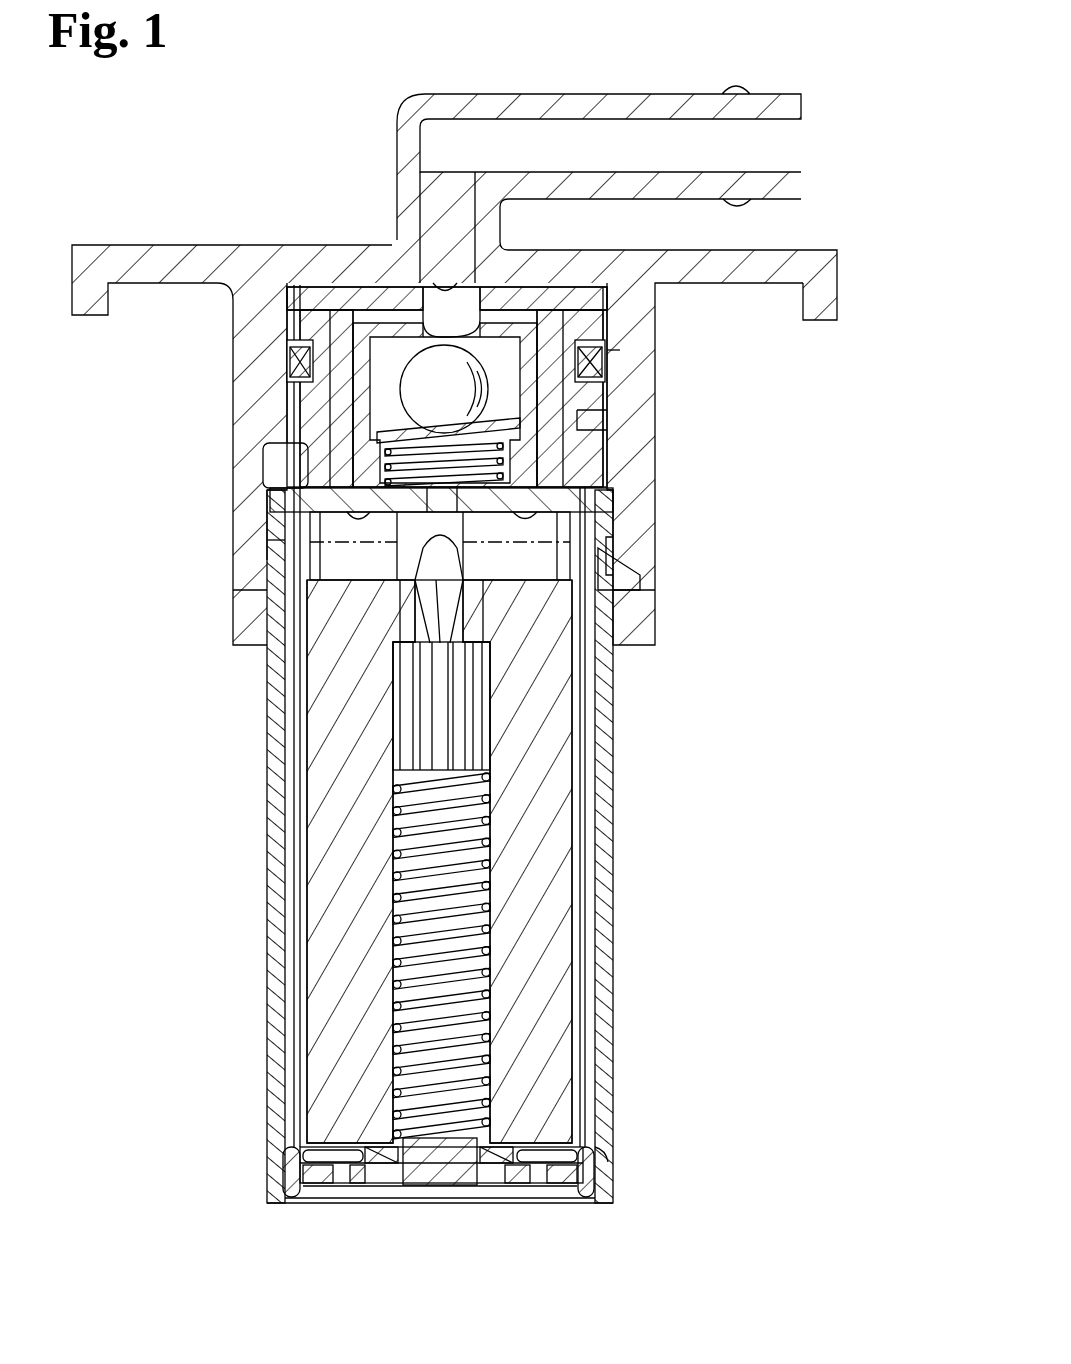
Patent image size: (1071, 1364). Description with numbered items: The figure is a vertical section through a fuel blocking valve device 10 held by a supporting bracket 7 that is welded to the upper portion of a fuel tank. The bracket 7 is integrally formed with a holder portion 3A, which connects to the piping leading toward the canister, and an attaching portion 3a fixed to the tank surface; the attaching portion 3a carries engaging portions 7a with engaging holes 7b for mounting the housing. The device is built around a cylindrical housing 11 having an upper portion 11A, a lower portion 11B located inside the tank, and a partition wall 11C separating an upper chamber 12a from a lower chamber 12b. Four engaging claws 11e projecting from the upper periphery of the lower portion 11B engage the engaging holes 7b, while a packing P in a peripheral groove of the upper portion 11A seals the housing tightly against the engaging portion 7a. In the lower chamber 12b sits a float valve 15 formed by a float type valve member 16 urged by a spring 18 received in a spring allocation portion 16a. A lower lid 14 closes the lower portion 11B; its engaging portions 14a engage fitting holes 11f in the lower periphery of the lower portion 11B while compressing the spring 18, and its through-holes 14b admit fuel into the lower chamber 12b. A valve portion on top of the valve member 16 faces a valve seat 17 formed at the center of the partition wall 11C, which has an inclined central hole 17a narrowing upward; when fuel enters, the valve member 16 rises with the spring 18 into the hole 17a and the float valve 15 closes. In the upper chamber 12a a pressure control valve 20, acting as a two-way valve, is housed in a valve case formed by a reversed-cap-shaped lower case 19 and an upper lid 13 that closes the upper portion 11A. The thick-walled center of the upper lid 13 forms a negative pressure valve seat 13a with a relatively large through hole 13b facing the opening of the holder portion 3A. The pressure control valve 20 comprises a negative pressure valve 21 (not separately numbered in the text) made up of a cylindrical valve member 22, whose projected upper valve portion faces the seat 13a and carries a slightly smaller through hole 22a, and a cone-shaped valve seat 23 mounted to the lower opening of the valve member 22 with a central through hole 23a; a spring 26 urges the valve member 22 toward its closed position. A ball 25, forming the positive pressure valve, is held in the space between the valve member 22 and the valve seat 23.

The holder portion 3A is at (670, 100).
The attaching portion 3a is at (805, 268).
The supporting bracket 7 is at (443, 371).
The engaging portion 7a is at (242, 607).
The engaging hole 7b is at (647, 553).
The fuel blocking valve device 10 is at (439, 668).
The cylindrical housing 11 is at (403, 806).
The upper portion 11A is at (305, 440).
The lower portion 11B is at (268, 498).
The partition wall 11C is at (275, 530).
The engaging claw 11e is at (640, 578).
The fitting hole 11f is at (612, 1160).
The upper chamber 12a is at (290, 296).
The lower chamber 12b is at (578, 942).
The upper lid 13 is at (529, 227).
The negative pressure valve seat 13a is at (373, 288).
The through hole 13b is at (462, 283).
The lower lid 14 is at (529, 1225).
The engaging portion 14a is at (605, 1173).
The through-hole 14b is at (342, 1175).
The float valve 15 is at (408, 896).
The valve member 16 is at (346, 942).
The spring allocation portion 16a is at (483, 1130).
The valve seat 17 is at (438, 629).
The inclined central hole 17a is at (585, 520).
The spring 18 is at (392, 782).
The lower case 19 is at (610, 400).
The pressure control valve 20 is at (424, 300).
The valve mechanism 21 is at (440, 405).
The valve member 22 is at (403, 385).
The through hole 22a is at (440, 292).
The valve seat 23 is at (469, 405).
The through hole 23a is at (595, 437).
The ball 25 is at (367, 224).
The spring 26 is at (515, 478).
The packing P is at (653, 372).